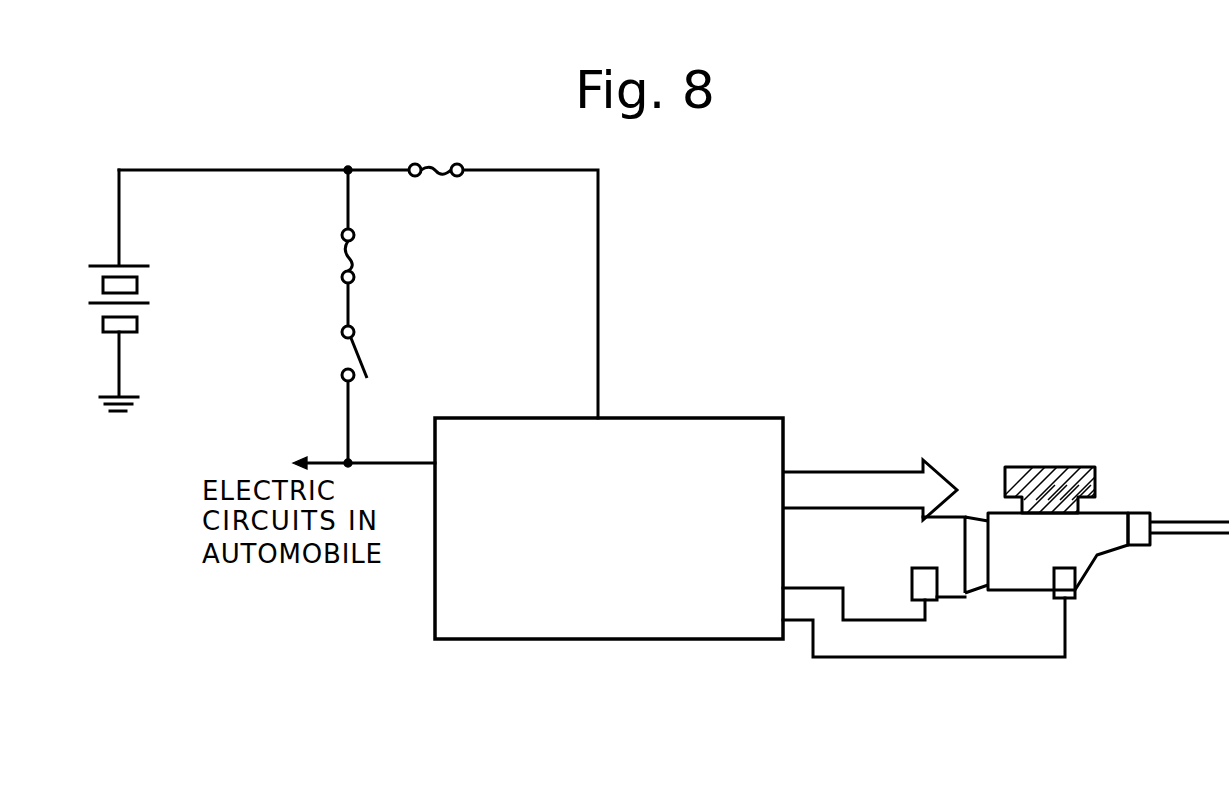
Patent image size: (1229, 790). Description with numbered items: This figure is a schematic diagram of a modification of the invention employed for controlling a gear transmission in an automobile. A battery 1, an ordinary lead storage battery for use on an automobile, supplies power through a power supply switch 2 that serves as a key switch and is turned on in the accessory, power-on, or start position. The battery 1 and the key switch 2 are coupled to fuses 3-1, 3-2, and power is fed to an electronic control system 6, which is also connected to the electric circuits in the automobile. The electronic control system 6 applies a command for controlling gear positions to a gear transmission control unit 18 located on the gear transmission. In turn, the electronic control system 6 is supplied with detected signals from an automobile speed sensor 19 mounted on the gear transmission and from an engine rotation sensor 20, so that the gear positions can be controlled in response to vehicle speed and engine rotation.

The battery 1 is at (150, 292).
The power supply switch 2 is at (370, 354).
The fuse 3-1 is at (362, 259).
The fuse 3-2 is at (435, 183).
The electronic control system 6 is at (673, 418).
The gear transmission control unit 18 is at (1065, 467).
The automobile speed sensor 19 is at (1076, 598).
The engine rotation sensor 20 is at (925, 590).